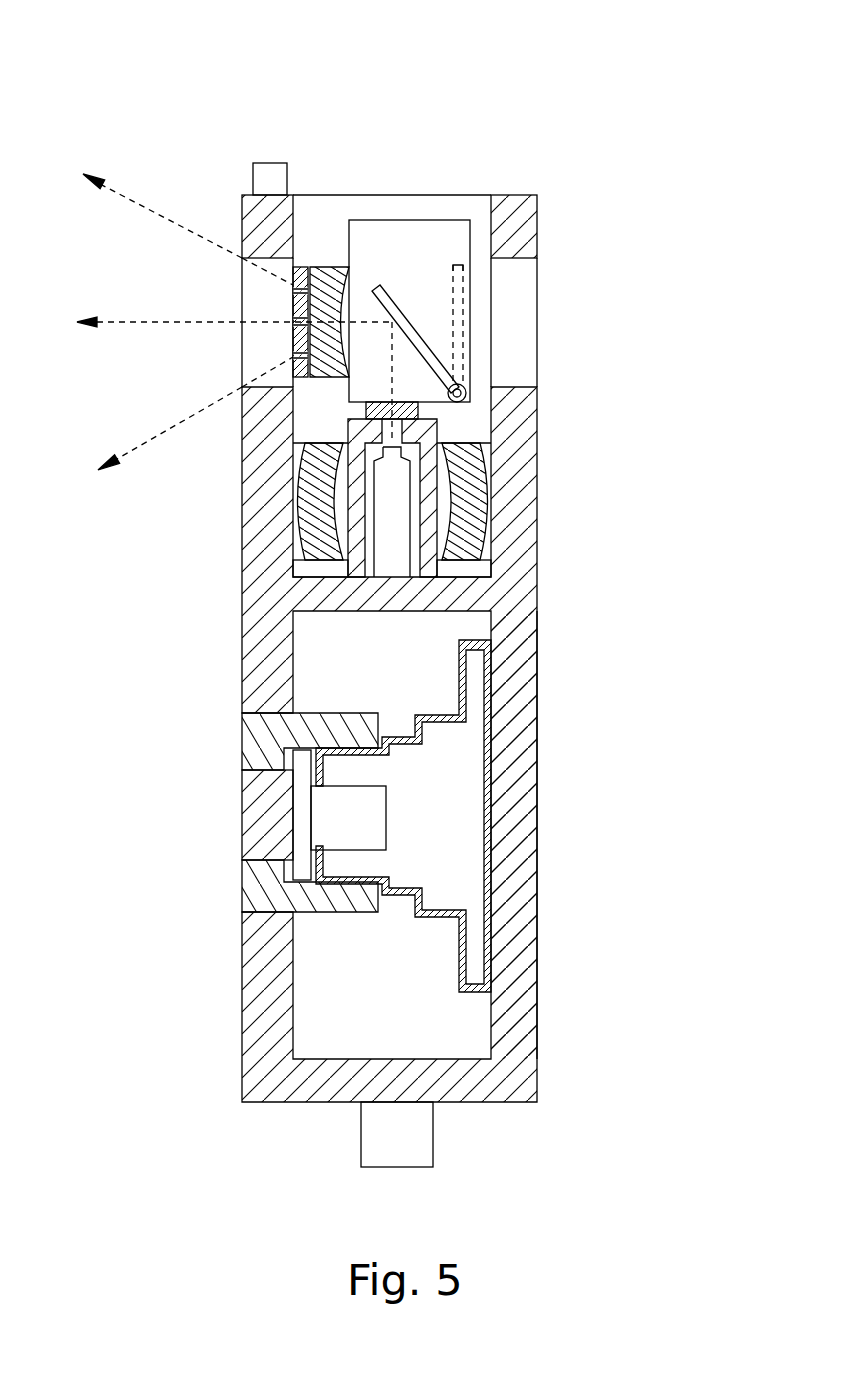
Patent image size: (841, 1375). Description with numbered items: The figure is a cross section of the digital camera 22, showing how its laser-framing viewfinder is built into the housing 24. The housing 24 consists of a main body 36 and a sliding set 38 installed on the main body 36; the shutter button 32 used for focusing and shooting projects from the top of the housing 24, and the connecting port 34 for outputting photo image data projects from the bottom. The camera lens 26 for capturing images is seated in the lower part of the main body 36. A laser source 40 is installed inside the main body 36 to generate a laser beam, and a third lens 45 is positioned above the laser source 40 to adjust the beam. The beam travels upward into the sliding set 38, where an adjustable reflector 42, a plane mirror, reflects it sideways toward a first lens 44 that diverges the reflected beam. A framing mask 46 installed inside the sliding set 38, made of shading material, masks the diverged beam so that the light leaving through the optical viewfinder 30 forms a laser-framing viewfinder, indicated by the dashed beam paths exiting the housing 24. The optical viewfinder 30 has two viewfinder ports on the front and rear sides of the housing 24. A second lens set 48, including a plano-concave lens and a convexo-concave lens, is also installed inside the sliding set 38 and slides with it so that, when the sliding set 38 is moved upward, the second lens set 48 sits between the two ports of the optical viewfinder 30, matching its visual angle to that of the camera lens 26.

The digital camera 22 is at (553, 108).
The housing 24 is at (537, 212).
The camera lens 26 is at (478, 887).
The optical viewfinder 30 is at (260, 348).
The shutter button 32 is at (270, 163).
The connecting port 34 is at (433, 1134).
The main body 36 is at (520, 790).
The sliding set 38 is at (383, 195).
The laser source 40 is at (400, 537).
The reflector 42 is at (385, 287).
The first lens 44 is at (322, 267).
The third lens 45 is at (418, 412).
The framing mask 46 is at (297, 288).
The second lens set 48 is at (478, 465).